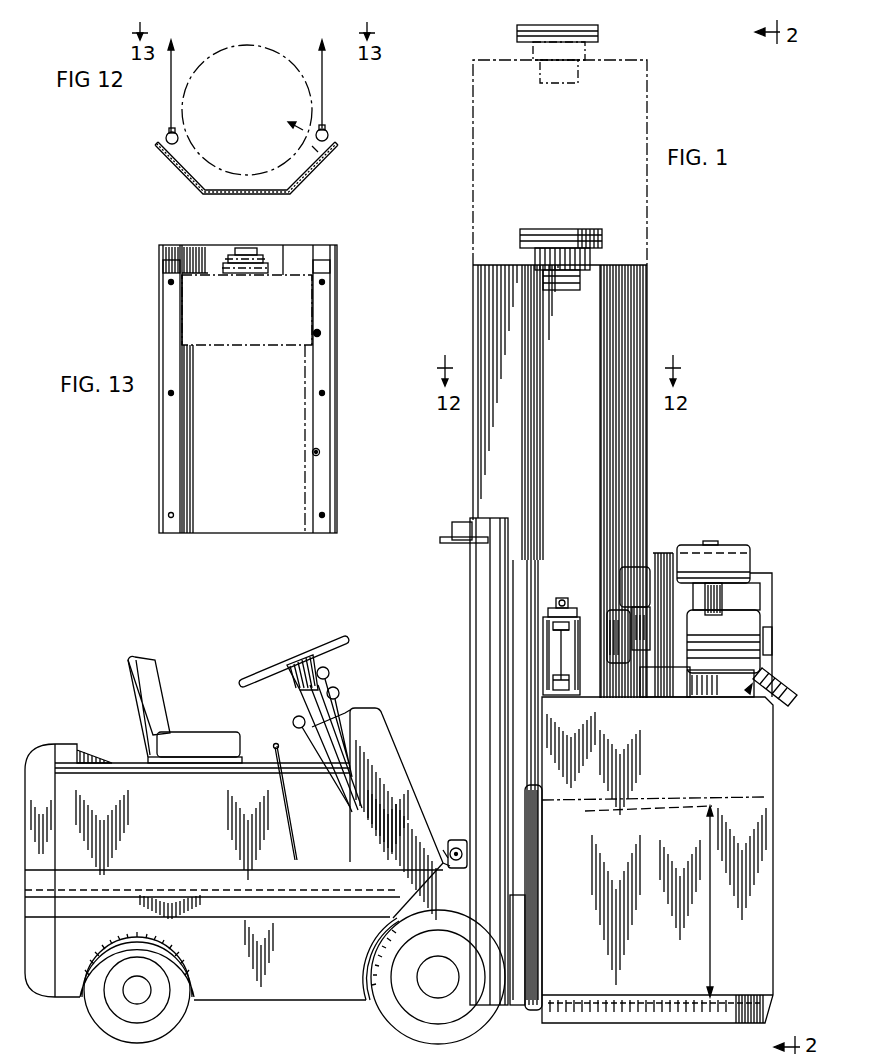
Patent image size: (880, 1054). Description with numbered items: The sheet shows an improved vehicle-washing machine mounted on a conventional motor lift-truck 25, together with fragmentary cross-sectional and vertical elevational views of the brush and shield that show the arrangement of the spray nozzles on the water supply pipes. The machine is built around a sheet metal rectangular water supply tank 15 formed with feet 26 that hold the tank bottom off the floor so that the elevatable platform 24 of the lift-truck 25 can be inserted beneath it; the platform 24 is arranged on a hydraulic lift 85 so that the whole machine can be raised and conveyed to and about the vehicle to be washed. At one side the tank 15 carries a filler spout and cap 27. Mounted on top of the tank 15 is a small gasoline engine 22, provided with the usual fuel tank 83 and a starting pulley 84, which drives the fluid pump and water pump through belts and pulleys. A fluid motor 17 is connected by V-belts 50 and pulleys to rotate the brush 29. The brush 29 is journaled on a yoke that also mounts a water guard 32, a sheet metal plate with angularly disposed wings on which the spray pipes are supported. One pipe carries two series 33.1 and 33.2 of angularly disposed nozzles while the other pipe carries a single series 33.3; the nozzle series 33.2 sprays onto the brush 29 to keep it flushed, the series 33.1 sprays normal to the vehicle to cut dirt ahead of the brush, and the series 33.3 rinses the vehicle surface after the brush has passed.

In FIG. 1, the water supply tank 15 is at (682, 763).
In FIG. 1, the fluid motor 17 is at (588, 262).
In FIG. 1, the engine 22 is at (755, 572).
In FIG. 1, the elevatable platform 24 is at (538, 1008).
In FIG. 1, the motor lift-truck 25 is at (194, 835).
In FIG. 1, the feet 26 is at (640, 1012).
In FIG. 1, the filler spout and cap 27 is at (776, 712).
In FIG. 12, the brush 29 is at (257, 118).
In FIG. 13, the brush 29 is at (283, 413).
In FIG. 12, the water guard 32 is at (183, 171).
In FIG. 13, the water guard 32 is at (336, 249).
In FIG. 1, the water guard 32 is at (637, 312).
In FIG. 12, the nozzle series 33.1 is at (328, 132).
In FIG. 13, the nozzle series 33.1 is at (325, 282).
In FIG. 12, the nozzle series 33.2 is at (314, 146).
In FIG. 13, the nozzle series 33.2 is at (321, 333).
In FIG. 12, the nozzle series 33.3 is at (167, 134).
In FIG. 13, the nozzle series 33.3 is at (169, 282).
In FIG. 1, the V-belts 50 is at (520, 237).
In FIG. 1, the fuel tank 83 is at (730, 545).
In FIG. 1, the starting pulley 84 is at (773, 640).
In FIG. 1, the hydraulic lift 85 is at (476, 708).